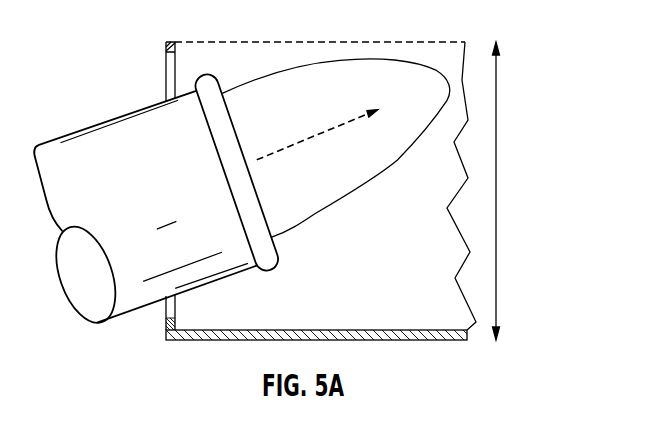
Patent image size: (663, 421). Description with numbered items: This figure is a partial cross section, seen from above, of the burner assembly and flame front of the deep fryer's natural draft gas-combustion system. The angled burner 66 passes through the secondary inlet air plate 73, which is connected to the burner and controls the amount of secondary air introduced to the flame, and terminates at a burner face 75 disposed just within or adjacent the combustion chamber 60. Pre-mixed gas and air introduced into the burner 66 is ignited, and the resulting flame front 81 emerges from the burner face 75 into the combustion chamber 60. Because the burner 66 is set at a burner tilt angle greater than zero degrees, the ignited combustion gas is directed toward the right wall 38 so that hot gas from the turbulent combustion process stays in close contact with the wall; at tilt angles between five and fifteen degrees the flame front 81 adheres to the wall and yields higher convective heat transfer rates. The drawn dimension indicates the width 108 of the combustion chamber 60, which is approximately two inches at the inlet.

The right wall 38 is at (310, 42).
The combustion chamber 60 is at (248, 341).
The inlet air plate 73 is at (164, 45).
The burner face 75 is at (196, 80).
The angled burner 66 is at (105, 120).
The flame front 81 is at (349, 172).
The width 108 is at (497, 141).